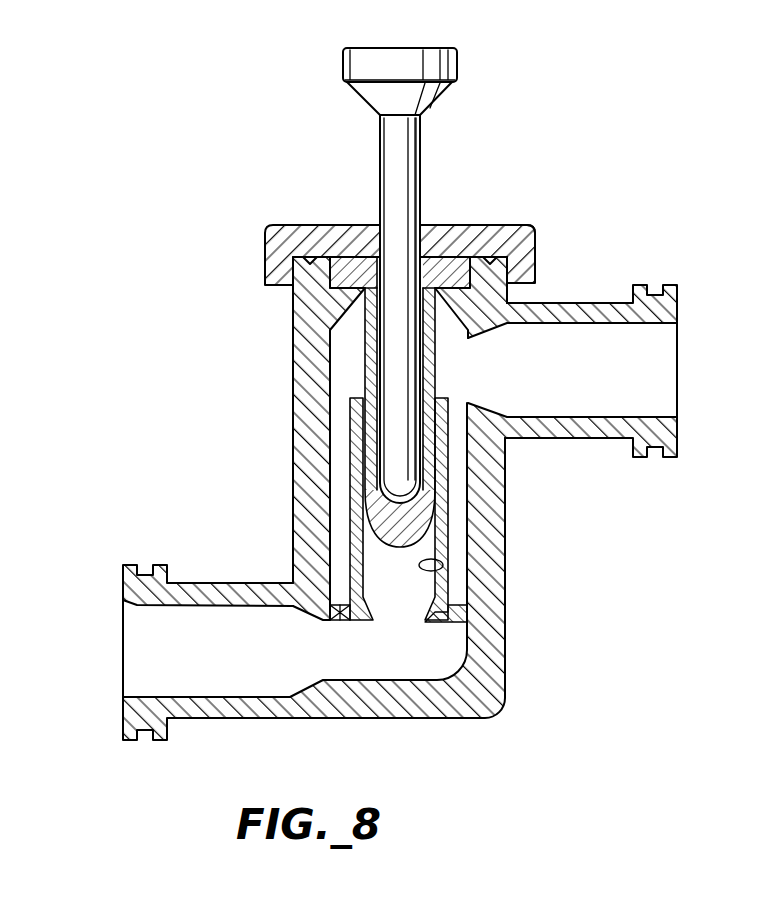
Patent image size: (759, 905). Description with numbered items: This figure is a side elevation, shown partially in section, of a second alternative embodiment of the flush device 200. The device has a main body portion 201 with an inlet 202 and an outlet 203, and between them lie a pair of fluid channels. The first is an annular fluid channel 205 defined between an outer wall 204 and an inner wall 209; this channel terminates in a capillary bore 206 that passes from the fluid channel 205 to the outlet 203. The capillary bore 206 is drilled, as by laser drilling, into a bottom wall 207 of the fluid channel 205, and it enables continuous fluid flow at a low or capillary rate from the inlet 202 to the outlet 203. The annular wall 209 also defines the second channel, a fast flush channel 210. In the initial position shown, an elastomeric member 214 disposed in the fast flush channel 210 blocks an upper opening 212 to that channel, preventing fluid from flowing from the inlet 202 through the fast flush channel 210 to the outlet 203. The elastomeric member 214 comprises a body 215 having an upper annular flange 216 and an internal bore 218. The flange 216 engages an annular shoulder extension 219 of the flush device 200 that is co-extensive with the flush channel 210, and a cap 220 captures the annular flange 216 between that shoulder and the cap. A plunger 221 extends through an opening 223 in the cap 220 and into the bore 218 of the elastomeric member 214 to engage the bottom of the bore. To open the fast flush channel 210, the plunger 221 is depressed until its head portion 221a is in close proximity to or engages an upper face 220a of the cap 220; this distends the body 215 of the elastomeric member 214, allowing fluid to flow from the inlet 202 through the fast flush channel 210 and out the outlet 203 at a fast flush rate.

The flush device 200 is at (400, 408).
The main body portion 201 is at (400, 512).
The inlet 202 is at (583, 386).
The outlet 203 is at (193, 660).
The outer wall 204 is at (292, 483).
The annular fluid channel 205 is at (335, 513).
The capillary bore 206 is at (327, 618).
The bottom wall 207 is at (353, 620).
The inner wall 209 is at (450, 492).
The fast flush channel 210 is at (443, 573).
The upper opening 212 is at (363, 412).
The elastomeric member 214 is at (442, 340).
The body 215 is at (440, 372).
The upper annular flange 216 is at (327, 281).
The internal bore 218 is at (377, 350).
The annular shoulder extension 219 is at (458, 302).
The cap 220 is at (323, 240).
The upper face 220a is at (520, 228).
The plunger 221 is at (392, 185).
The head portion 221a is at (450, 70).
The opening 223 is at (412, 232).